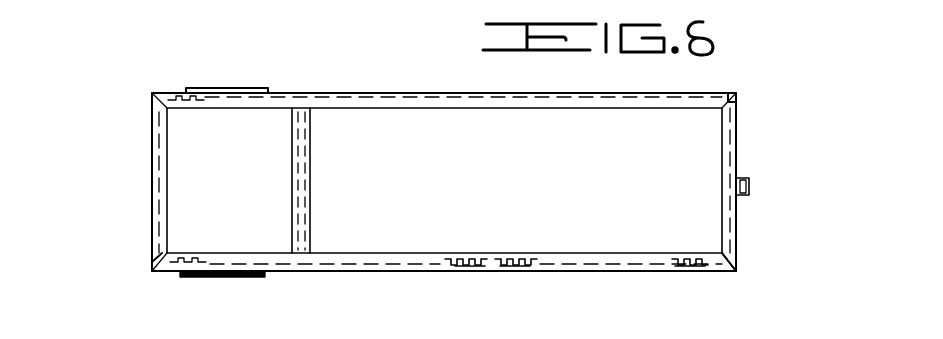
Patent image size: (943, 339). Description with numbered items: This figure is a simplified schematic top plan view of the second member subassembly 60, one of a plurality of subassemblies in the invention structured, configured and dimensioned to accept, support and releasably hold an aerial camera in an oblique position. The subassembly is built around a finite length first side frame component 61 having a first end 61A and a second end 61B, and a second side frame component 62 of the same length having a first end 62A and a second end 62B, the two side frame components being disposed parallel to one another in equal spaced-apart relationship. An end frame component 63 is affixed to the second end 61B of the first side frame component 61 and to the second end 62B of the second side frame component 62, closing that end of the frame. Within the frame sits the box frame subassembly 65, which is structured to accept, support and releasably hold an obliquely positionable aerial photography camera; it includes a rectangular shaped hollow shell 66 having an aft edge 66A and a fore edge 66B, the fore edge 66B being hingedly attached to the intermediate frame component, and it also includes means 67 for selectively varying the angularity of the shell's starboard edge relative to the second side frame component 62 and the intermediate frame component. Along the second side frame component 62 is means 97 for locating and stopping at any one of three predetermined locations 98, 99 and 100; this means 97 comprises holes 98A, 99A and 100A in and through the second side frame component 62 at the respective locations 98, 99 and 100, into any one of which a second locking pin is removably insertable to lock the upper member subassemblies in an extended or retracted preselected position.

The second member subassembly 60 is at (362, 82).
The first side frame component 61 is at (328, 100).
The first end of first side frame component 61A is at (178, 95).
The second end of first side frame component 61B is at (737, 98).
The second side frame component 62 is at (343, 262).
The first end of second side frame component 62A is at (168, 262).
The second end of second side frame component 62B is at (725, 271).
The end frame component 63 is at (725, 235).
The box frame subassembly 65 is at (316, 165).
The rectangular shaped hollow shell 66 is at (158, 217).
The aft edge 66A is at (152, 168).
The fore edge 66B is at (311, 200).
The means for selectively varying angularity 67 is at (207, 282).
The means for locating and stopping 97 is at (610, 236).
The first predetermined location 98 is at (462, 258).
The hole at first predetermined location 98A is at (470, 268).
The second predetermined location 99 is at (508, 258).
The hole at second predetermined location 99A is at (512, 268).
The third predetermined location 100 is at (690, 252).
The hole at third predetermined location 100A is at (690, 272).